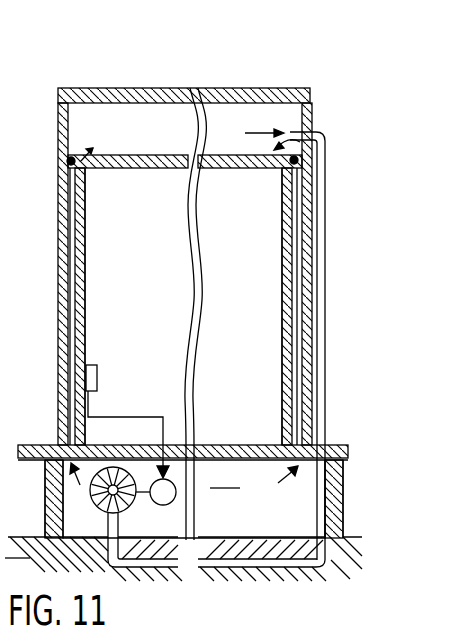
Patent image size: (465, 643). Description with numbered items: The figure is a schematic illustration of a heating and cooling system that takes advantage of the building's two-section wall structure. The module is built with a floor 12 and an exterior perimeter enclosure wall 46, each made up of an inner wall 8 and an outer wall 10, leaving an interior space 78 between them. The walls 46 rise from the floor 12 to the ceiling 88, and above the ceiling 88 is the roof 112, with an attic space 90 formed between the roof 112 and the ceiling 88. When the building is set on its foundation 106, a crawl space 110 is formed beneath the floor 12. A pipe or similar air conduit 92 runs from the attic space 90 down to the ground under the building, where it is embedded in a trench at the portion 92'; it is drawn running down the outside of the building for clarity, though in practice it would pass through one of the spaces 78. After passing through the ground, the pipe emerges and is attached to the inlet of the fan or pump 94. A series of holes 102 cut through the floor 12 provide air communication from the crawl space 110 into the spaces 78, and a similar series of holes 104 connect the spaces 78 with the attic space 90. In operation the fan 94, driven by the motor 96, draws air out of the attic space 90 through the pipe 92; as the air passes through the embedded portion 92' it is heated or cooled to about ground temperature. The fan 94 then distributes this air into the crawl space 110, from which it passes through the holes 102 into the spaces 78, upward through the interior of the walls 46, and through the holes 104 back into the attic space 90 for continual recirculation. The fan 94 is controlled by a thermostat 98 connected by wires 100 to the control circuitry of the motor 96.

The attic space 90 is at (131, 108).
The outer wall 10 is at (57, 245).
The holes 104 is at (72, 160).
The ceiling 88 is at (220, 155).
The interior space 78 is at (72, 299).
The exterior perimeter enclosure wall 46 is at (86, 218).
The inner wall 8 is at (86, 263).
The roof 112 is at (213, 97).
The pipe 92 is at (311, 311).
The holes 102 is at (62, 447).
The floor 12 is at (227, 445).
The thermostat 98 is at (94, 365).
The wires 100 is at (96, 414).
The crawl space 110 is at (194, 499).
The foundation 106 is at (336, 468).
The fan 94 is at (126, 508).
The motor 96 is at (180, 495).
The embedded pipe portion 92' is at (216, 540).